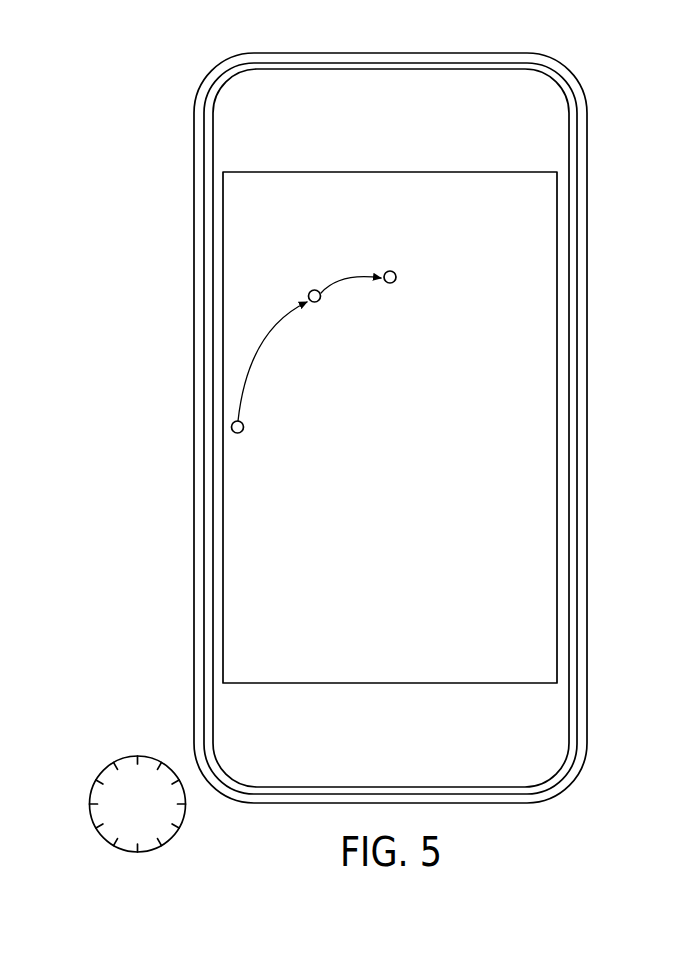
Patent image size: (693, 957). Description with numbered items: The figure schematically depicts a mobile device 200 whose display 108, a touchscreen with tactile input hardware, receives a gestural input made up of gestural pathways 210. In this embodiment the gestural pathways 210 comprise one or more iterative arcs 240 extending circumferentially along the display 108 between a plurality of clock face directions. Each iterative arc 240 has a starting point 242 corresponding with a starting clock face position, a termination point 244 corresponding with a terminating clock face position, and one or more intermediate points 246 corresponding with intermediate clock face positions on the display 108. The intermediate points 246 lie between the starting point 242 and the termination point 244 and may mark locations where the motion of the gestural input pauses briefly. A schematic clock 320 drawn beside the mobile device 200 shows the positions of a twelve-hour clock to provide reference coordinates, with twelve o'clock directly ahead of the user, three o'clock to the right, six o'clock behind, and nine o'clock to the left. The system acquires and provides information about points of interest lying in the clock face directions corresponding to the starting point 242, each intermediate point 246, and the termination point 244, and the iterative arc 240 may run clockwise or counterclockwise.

The mobile device 200 is at (587, 130).
The display 108 is at (240, 225).
The gestural pathways 210 is at (334, 238).
The iterative arcs 240 is at (222, 361).
The starting point 242 is at (243, 432).
The termination point 244 is at (393, 271).
The intermediate points 246 is at (319, 301).
The schematic clock 320 is at (136, 764).